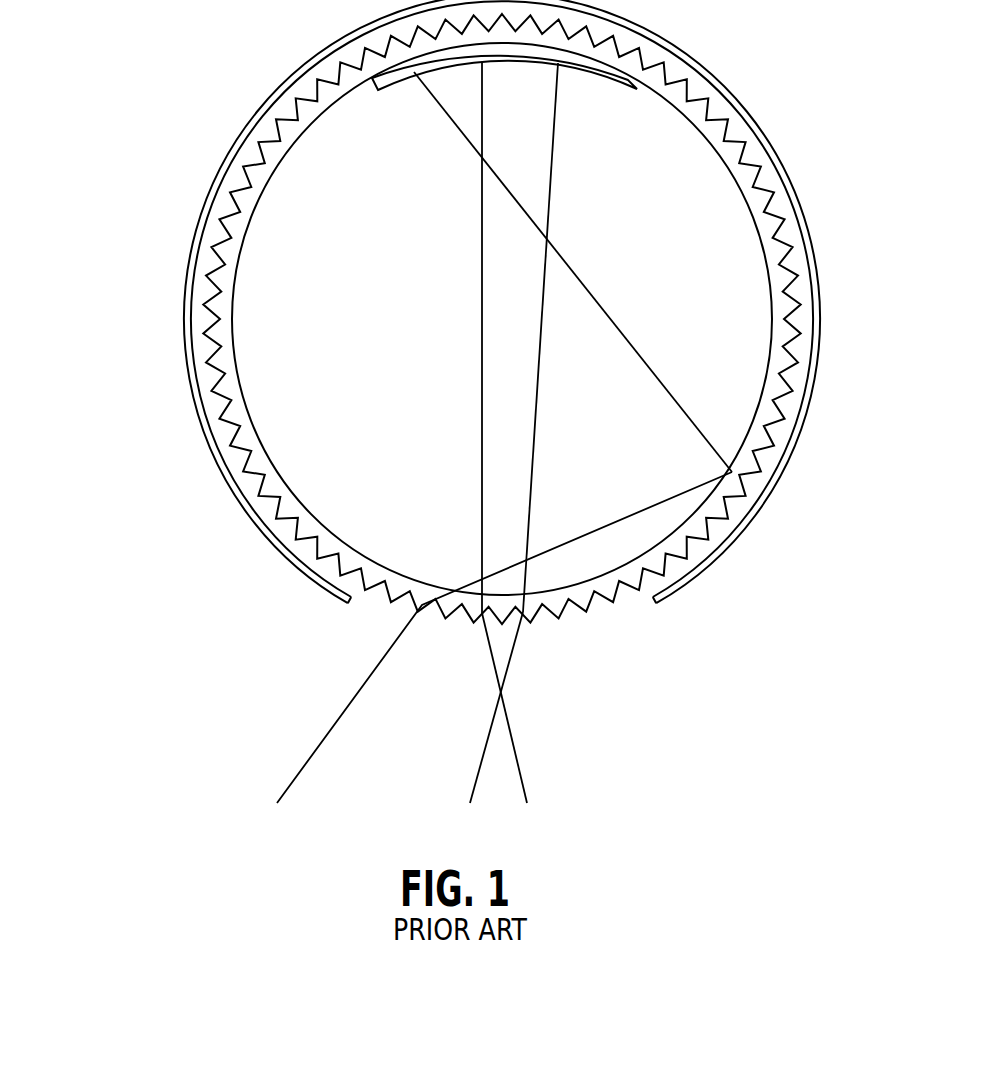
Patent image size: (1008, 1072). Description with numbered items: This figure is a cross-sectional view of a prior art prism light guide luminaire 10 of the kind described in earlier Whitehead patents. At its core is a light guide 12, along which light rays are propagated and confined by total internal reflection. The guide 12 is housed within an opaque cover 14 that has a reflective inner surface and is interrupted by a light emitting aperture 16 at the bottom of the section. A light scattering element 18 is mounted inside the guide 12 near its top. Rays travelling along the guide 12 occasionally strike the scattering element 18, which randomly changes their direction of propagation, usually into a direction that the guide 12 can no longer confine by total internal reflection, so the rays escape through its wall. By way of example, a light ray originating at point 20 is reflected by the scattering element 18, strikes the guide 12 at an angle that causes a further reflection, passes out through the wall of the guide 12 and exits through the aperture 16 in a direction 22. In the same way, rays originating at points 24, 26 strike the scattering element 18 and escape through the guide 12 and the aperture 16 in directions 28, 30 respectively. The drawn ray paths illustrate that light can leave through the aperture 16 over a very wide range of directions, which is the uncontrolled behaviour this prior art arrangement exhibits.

The prism light guide luminaire 10 is at (180, 530).
The light guide 12 is at (750, 190).
The opaque cover 14 is at (818, 318).
The light emitting aperture 16 is at (577, 635).
The light scattering element 18 is at (601, 84).
The point 20 is at (414, 72).
The direction 22 is at (488, 653).
The point 24 is at (481, 64).
The point 26 is at (558, 65).
The direction 28 is at (519, 725).
The direction 30 is at (484, 722).